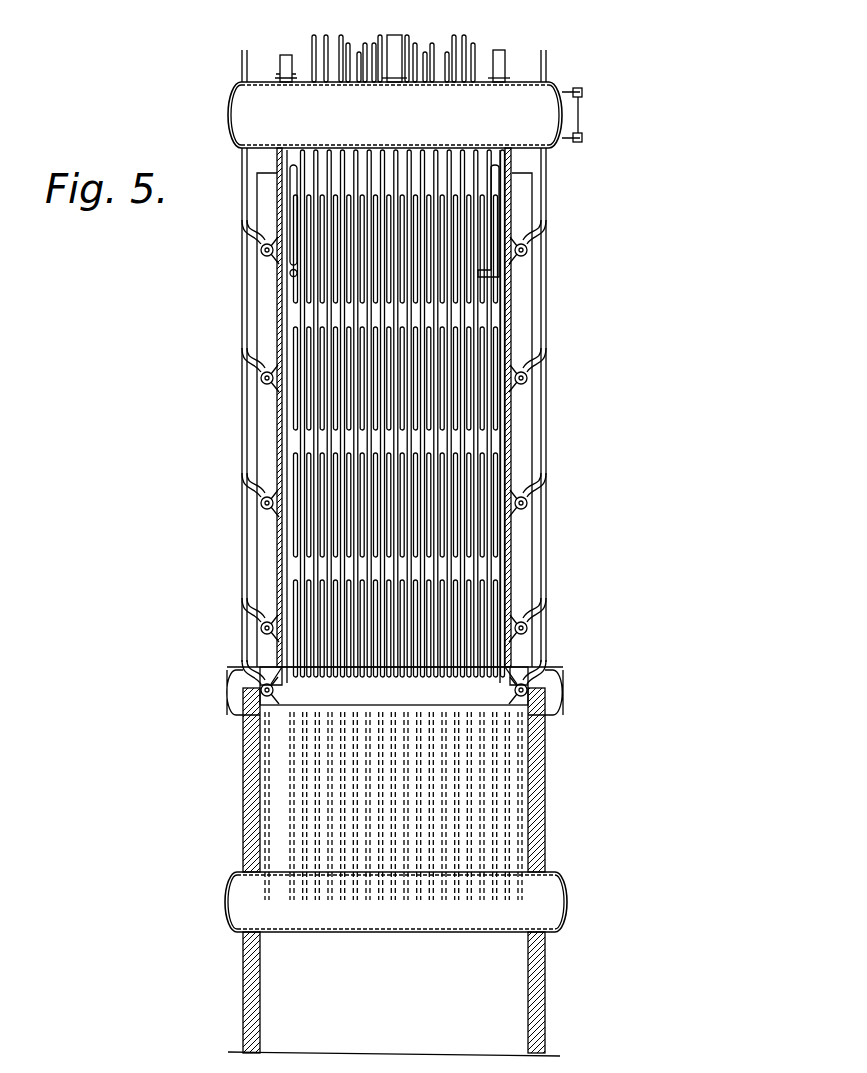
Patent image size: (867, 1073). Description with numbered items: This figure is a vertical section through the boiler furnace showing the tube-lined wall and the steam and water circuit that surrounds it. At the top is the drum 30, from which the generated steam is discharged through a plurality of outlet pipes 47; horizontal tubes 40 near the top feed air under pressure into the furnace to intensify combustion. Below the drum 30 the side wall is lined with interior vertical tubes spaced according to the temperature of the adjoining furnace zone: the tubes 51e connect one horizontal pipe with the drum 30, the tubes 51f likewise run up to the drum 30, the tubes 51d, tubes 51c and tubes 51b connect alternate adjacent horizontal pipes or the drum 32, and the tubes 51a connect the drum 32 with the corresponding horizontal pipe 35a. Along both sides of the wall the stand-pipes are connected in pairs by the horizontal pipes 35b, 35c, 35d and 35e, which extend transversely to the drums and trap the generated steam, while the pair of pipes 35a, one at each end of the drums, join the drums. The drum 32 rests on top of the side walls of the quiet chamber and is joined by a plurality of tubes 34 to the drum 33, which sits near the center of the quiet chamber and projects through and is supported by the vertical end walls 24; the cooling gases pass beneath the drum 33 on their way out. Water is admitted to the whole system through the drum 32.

The end walls 24 is at (252, 965).
The drum 30 is at (247, 110).
The drum 32 is at (557, 698).
The drum 33 is at (566, 898).
The tubes 34 is at (500, 822).
The horizontal pipes 35a is at (264, 685).
The horizontal pipe 35b is at (260, 628).
The horizontal pipe 35c is at (260, 505).
The horizontal pipe 35d is at (260, 378).
The horizontal pipe 35e is at (258, 253).
The horizontal tubes 40 is at (292, 219).
The outlet pipes 47 is at (280, 61).
The tubes 51a is at (485, 587).
The tubes 51b is at (493, 572).
The tubes 51c is at (483, 440).
The tubes 51d is at (480, 317).
The tubes 51e is at (345, 185).
The tubes 51f is at (452, 155).